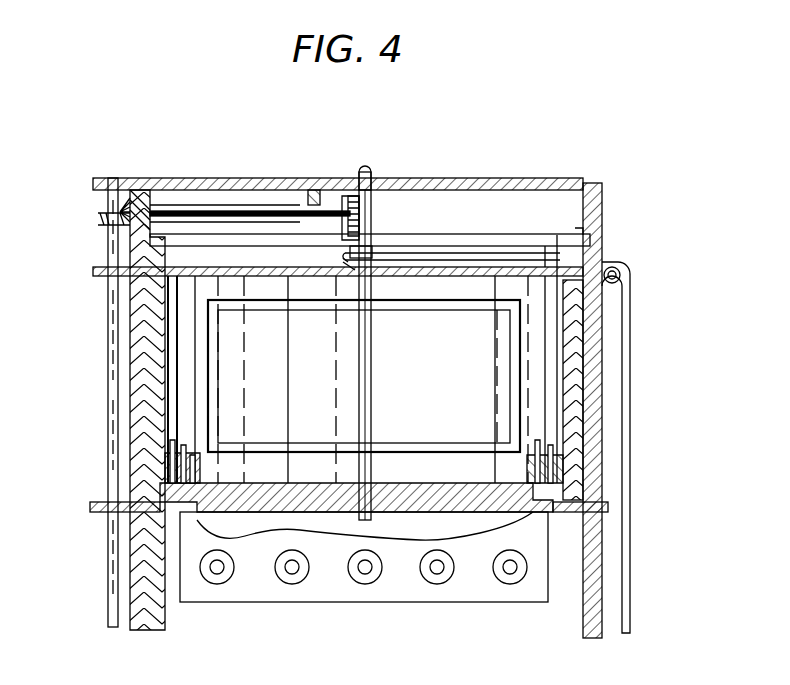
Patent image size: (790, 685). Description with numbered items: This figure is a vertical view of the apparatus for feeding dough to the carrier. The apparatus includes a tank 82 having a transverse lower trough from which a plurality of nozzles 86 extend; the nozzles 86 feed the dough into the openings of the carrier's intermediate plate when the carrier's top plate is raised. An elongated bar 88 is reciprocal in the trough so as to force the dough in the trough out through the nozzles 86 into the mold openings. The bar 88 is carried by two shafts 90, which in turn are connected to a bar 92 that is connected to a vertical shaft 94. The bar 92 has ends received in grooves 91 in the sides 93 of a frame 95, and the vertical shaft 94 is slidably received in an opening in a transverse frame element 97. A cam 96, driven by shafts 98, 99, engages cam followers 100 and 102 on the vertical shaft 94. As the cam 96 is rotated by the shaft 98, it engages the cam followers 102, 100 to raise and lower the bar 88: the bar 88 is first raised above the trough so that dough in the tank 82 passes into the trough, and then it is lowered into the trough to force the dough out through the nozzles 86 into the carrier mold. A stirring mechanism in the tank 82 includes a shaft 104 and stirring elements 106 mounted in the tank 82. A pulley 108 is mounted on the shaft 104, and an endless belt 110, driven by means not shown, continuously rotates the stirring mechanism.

The tank 82 is at (152, 388).
The nozzles 86 is at (443, 577).
The elongated bar 88 is at (408, 494).
The shafts 90 is at (580, 252).
The grooves 91 is at (582, 232).
The bar 92 is at (470, 246).
The sides 93 is at (603, 216).
The vertical shaft 94 is at (372, 182).
The frame 95 is at (603, 182).
The cam 96 is at (347, 215).
The transverse frame element 97 is at (463, 188).
The shaft 98 is at (228, 212).
The shaft 99 is at (108, 332).
The cam follower 100 is at (345, 270).
The cam follower 102 is at (348, 206).
The shaft 104 is at (372, 388).
The stirring elements 106 is at (455, 300).
The pulley 108 is at (378, 252).
The endless belt 110 is at (630, 363).